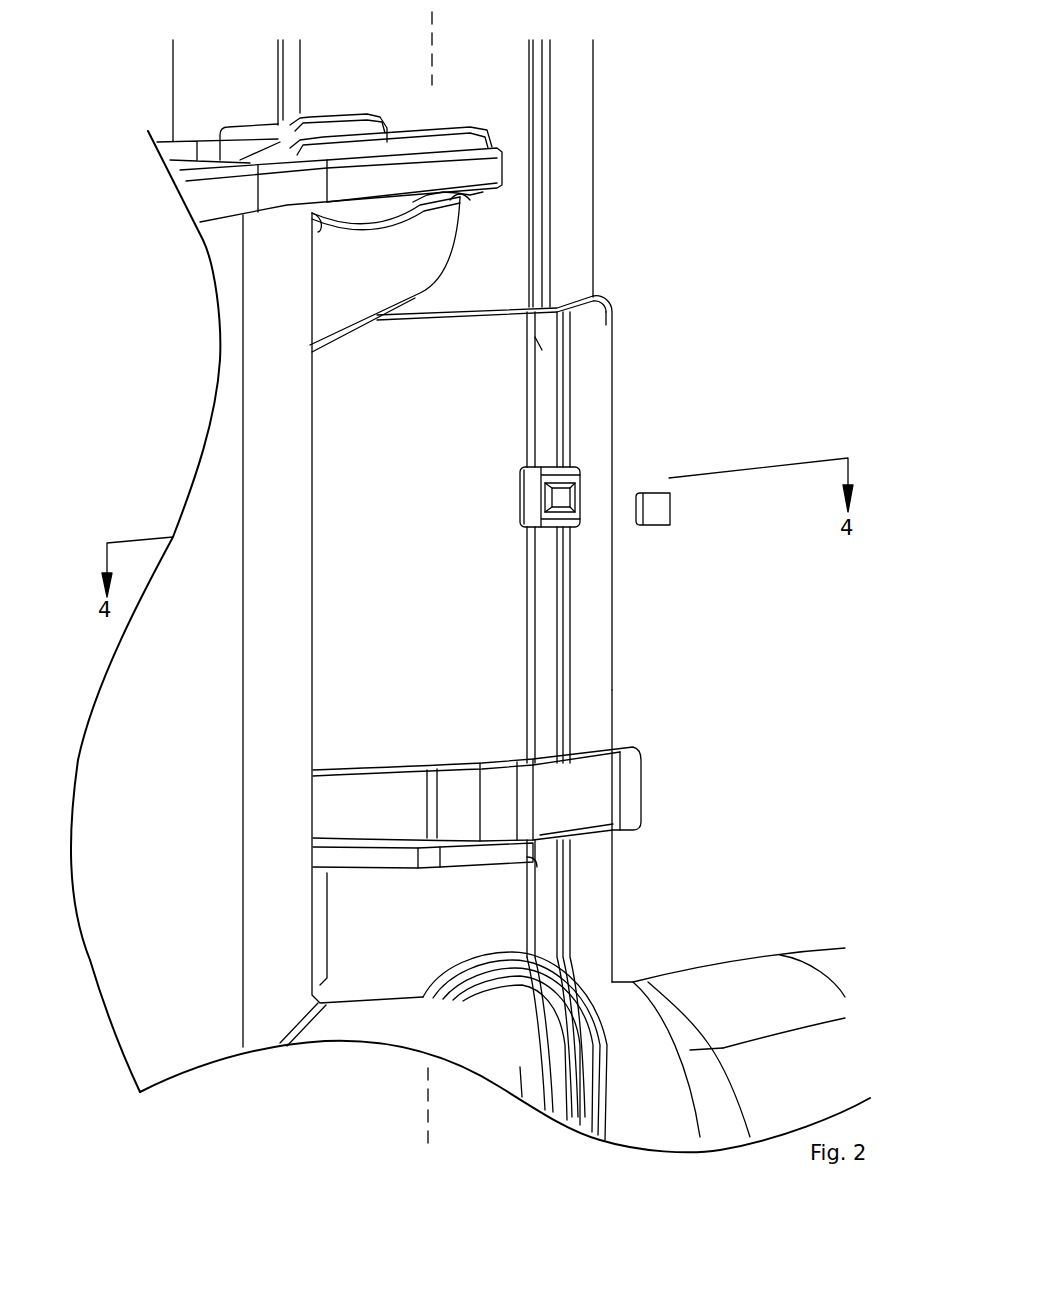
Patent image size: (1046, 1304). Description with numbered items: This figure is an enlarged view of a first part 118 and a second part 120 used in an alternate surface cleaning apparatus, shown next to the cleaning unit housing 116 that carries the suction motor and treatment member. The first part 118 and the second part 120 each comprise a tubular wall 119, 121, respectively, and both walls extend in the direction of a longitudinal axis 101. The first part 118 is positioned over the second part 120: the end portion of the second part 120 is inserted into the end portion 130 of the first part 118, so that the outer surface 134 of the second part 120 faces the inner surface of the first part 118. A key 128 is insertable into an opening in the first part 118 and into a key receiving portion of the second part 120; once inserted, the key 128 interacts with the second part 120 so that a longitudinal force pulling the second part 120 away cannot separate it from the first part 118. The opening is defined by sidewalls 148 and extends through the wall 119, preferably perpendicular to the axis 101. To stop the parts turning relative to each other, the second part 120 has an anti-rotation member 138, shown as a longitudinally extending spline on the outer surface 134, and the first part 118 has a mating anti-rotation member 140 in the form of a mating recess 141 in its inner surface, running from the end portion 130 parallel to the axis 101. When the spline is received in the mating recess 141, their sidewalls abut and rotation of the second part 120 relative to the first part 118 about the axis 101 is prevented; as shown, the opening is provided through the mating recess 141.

The longitudinal axis 101 is at (428, 1107).
The cleaning unit housing 116 is at (253, 422).
The first part 118 is at (592, 397).
The wall 119 is at (582, 698).
The second part 120 is at (578, 222).
The wall 121 is at (568, 127).
The key 128 is at (530, 528).
The end portion 130 is at (603, 327).
The outer surface 134 is at (515, 77).
The anti-rotation member 138 is at (547, 190).
The mating anti-rotation member 140 is at (574, 714).
The mating recess 141 is at (540, 337).
The sidewalls 148 is at (563, 497).